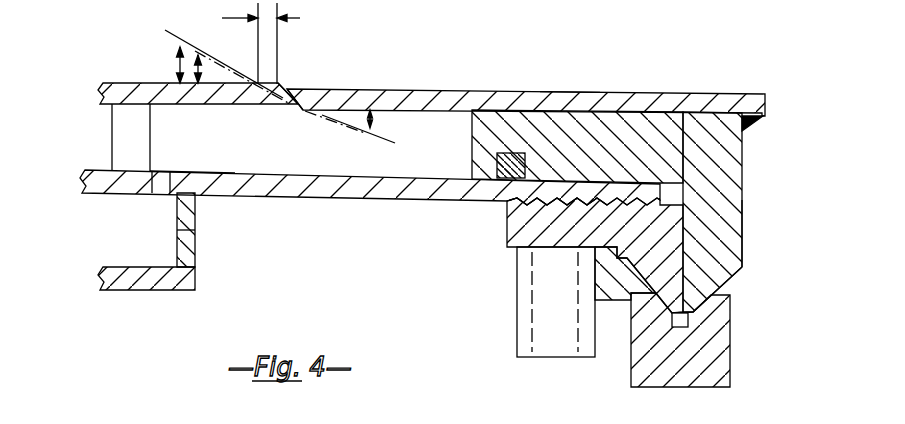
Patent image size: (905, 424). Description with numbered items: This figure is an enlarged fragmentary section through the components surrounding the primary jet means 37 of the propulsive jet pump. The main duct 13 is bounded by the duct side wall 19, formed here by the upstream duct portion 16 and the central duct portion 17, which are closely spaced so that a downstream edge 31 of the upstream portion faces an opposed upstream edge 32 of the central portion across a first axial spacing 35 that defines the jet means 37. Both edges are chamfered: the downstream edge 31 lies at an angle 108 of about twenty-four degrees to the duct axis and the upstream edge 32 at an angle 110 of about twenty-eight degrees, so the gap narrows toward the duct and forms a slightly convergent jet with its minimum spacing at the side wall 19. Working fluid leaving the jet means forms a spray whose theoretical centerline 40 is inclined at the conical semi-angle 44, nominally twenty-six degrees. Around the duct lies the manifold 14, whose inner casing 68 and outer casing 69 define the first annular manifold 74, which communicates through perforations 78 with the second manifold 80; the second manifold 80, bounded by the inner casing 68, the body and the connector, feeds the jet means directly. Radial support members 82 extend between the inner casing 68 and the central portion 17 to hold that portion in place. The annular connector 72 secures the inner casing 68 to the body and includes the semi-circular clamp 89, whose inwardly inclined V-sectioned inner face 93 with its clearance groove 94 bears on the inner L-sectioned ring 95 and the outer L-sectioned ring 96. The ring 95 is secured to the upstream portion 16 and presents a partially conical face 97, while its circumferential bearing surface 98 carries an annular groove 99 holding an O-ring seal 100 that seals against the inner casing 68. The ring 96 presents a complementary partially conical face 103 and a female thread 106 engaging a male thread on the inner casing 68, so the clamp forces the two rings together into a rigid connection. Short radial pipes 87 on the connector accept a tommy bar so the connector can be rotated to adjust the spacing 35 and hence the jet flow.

The main duct 13 is at (616, 65).
The manifold 14 is at (208, 223).
The upstream duct portion 16 is at (568, 88).
The central duct portion 17 is at (222, 100).
The duct side wall 19 is at (434, 89).
The downstream edge 31 is at (297, 106).
The upstream edge 32 is at (290, 88).
The first axial spacing 35 is at (302, 20).
The primary jet means 37 is at (279, 72).
The primary conical spray 40 is at (178, 14).
The conical semi-angle 44 is at (178, 62).
The inner casing 68 is at (286, 195).
The outer casing 69 is at (128, 285).
The annular connector 72 is at (575, 364).
The first annular manifold 74 is at (140, 256).
The perforations 78 is at (100, 196).
The second manifold 80 is at (236, 167).
The radial support members 82 is at (143, 152).
The short radial pipes 87 is at (518, 300).
The semi-circular clamp 89 is at (672, 394).
The inner face 93 is at (698, 300).
The clearance groove 94 is at (672, 320).
The inner L-sectioned ring 95 is at (702, 134).
The outer L-sectioned ring 96 is at (497, 242).
The partially conical face 97 is at (728, 284).
The circumferential bearing surface 98 is at (507, 208).
The annular groove 99 is at (494, 162).
The O-ring seal 100 is at (518, 156).
The partially conical face 103 is at (652, 298).
The female thread 106 is at (584, 204).
The angle 108 is at (371, 121).
The angle 110 is at (200, 70).